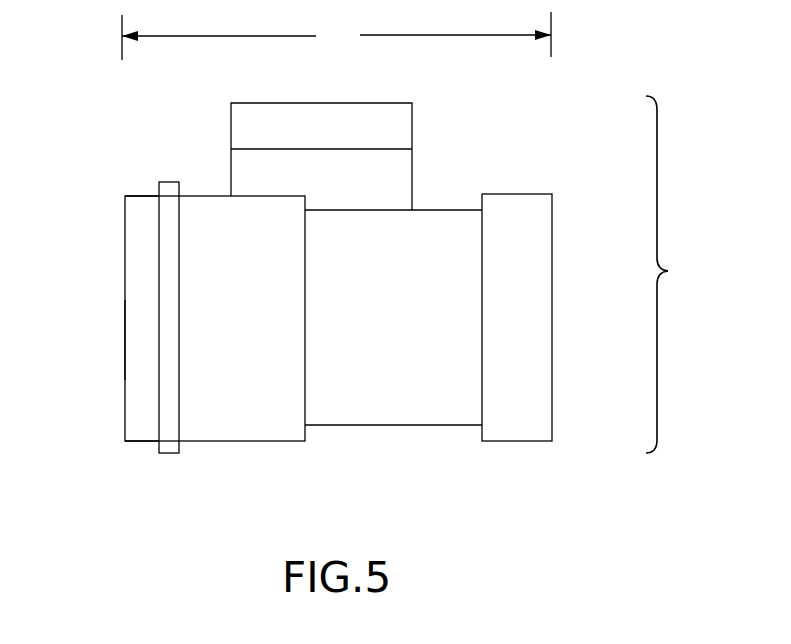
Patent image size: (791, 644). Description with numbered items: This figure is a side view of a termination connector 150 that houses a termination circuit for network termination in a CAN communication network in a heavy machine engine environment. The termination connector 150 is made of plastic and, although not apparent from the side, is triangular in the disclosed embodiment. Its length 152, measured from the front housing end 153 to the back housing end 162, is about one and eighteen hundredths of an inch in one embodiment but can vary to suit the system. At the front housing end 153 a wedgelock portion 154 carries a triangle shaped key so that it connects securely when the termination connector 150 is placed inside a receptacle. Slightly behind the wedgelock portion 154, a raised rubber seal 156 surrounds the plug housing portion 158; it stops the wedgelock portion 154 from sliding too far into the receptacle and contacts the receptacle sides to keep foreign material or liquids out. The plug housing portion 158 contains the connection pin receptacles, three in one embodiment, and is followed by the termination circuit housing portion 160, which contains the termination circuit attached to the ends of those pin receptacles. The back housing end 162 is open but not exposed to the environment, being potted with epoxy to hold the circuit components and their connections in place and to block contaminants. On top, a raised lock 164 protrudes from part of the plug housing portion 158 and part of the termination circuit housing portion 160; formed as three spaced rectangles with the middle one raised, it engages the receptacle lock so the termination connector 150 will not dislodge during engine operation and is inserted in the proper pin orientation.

The termination connector 150 is at (683, 274).
The length 152 is at (336, 36).
The front housing end 153 is at (122, 342).
The wedgelock portion 154 is at (139, 262).
The seal 156 is at (171, 456).
The plug housing portion 158 is at (246, 443).
The termination circuit housing portion 160 is at (397, 430).
The back housing end 162 is at (555, 315).
The raised lock 164 is at (325, 100).